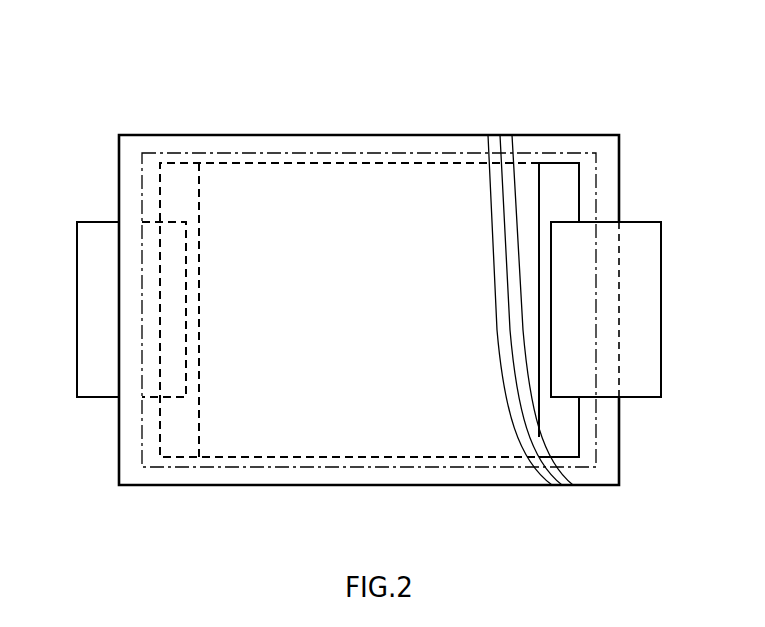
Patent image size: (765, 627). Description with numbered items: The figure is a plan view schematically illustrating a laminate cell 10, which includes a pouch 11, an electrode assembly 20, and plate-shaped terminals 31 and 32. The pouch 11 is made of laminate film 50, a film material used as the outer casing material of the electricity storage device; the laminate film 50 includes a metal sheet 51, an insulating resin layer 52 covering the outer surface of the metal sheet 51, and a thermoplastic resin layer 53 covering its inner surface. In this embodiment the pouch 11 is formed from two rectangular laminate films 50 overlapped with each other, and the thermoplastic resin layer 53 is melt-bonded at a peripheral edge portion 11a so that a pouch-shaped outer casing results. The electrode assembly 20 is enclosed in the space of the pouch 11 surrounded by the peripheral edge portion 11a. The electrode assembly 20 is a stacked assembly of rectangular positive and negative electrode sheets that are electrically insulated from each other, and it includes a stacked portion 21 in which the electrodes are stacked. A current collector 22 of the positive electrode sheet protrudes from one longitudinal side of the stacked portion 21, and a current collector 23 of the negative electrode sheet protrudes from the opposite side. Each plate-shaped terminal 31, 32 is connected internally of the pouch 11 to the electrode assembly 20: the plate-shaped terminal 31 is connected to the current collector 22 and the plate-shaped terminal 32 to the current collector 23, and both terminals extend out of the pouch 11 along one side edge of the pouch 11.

The laminate cell 10 is at (240, 70).
The pouch 11 is at (260, 487).
The peripheral edge portion 11a is at (294, 147).
The electrode assembly 20 is at (382, 163).
The stacked portion 21 is at (360, 392).
The current collector of the positive electrode sheet 22 is at (183, 168).
The current collector of the negative electrode sheet 23 is at (559, 165).
The plate-shaped terminal 31 is at (97, 228).
The plate-shaped terminal 32 is at (650, 230).
The laminate film 50 is at (432, 390).
The metal sheet 51 is at (510, 142).
The insulating resin layer 52 is at (488, 142).
The thermoplastic resin layer 53 is at (513, 145).